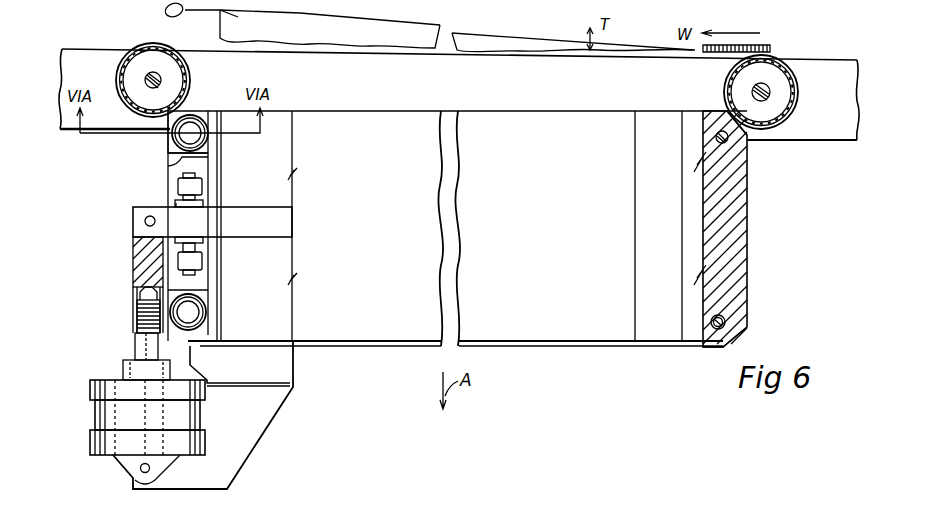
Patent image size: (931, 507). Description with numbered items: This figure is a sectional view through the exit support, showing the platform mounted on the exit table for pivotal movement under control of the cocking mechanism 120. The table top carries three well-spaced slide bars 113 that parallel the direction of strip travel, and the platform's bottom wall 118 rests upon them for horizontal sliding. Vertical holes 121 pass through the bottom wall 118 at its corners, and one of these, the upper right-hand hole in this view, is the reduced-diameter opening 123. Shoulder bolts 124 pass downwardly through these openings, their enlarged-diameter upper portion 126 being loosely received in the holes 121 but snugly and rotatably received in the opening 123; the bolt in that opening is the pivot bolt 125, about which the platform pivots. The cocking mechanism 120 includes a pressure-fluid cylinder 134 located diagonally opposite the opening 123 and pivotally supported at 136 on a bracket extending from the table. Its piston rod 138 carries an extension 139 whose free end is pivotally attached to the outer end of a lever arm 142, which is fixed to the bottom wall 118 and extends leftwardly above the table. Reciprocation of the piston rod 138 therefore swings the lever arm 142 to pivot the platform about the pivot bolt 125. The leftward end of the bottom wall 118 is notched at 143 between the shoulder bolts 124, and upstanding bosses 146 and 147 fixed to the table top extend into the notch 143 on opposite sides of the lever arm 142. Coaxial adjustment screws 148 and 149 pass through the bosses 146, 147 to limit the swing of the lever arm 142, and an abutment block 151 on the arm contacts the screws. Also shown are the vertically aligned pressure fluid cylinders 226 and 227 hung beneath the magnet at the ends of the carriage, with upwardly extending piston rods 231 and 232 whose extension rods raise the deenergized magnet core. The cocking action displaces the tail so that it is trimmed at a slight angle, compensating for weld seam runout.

The slide bars 113 is at (658, 335).
The bottom wall 118 is at (738, 213).
The cocking mechanism 120 is at (106, 495).
The vertical holes 121 is at (726, 323).
The reduced-diameter opening 123 is at (728, 141).
The shoulder bolt 124 is at (185, 137).
The pivot bolt 125 is at (721, 130).
The enlarged-diameter upper portion 126 is at (725, 318).
The pressure-fluid cylinder 134 is at (103, 441).
The pivotal support 136 is at (140, 469).
The piston rod 138 is at (136, 343).
The extension 139 is at (140, 264).
The lever arm 142 is at (133, 213).
The notch 143 is at (170, 160).
The upstanding boss 146 is at (178, 186).
The upstanding boss 147 is at (178, 262).
The adjustment screw 148 is at (175, 203).
The adjustment screw 149 is at (175, 241).
The abutment block 151 is at (177, 203).
The pressure fluid cylinder 226 is at (152, 58).
The pressure fluid cylinder 227 is at (766, 72).
The piston rod 231 is at (147, 80).
The piston rod 232 is at (771, 91).